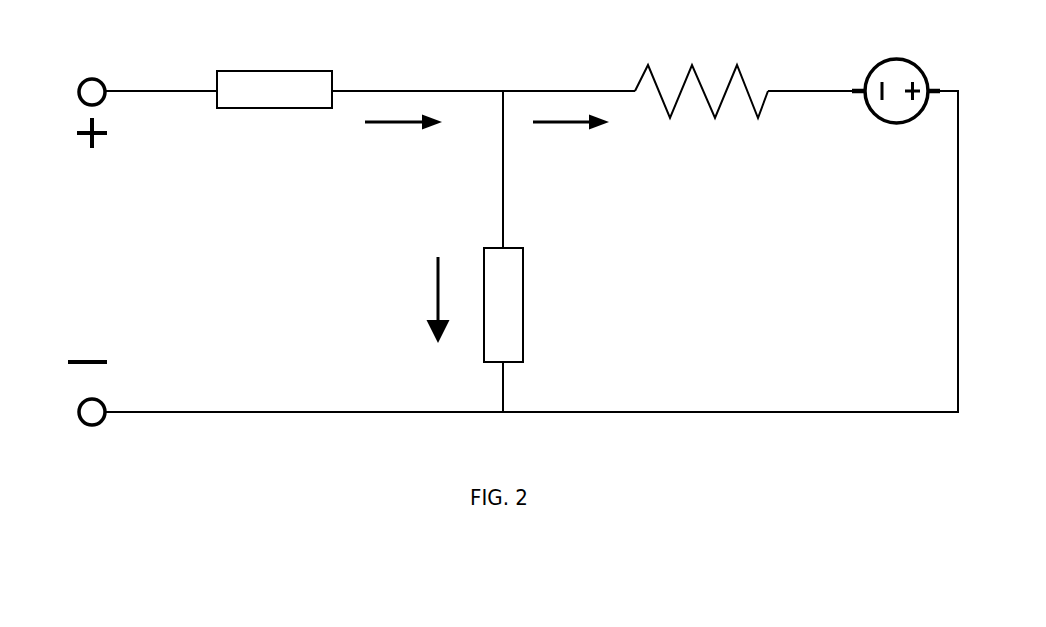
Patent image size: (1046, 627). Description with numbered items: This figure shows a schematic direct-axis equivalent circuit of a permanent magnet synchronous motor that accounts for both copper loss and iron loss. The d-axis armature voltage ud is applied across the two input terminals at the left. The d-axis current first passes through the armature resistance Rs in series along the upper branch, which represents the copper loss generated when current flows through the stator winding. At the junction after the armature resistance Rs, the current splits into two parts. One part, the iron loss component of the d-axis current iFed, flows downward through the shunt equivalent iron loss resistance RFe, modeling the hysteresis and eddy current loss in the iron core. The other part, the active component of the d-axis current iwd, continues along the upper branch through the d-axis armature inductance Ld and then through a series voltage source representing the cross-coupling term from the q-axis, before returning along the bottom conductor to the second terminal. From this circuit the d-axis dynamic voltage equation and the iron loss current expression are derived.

The d-axis armature voltage ud is at (96, 252).
The armature resistance Rs is at (274, 59).
The equivalent iron loss resistance RFe is at (541, 305).
The d-axis armature inductance Ld is at (701, 71).
The active component of the d-axis current iwd is at (487, 152).
The iron loss component of the d-axis current iFed is at (402, 300).